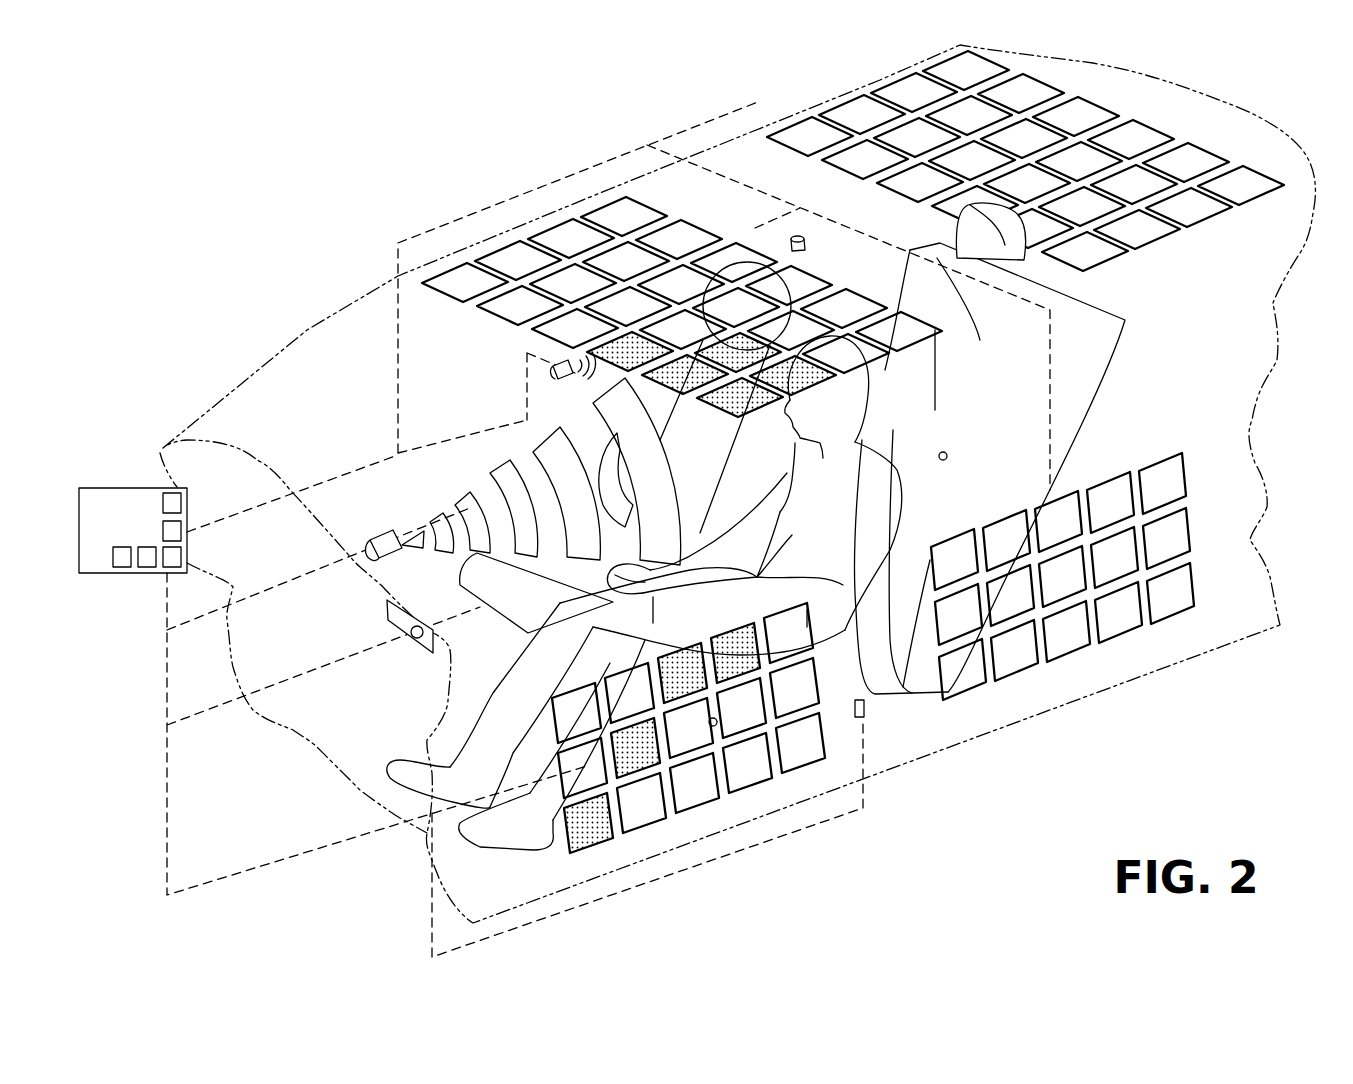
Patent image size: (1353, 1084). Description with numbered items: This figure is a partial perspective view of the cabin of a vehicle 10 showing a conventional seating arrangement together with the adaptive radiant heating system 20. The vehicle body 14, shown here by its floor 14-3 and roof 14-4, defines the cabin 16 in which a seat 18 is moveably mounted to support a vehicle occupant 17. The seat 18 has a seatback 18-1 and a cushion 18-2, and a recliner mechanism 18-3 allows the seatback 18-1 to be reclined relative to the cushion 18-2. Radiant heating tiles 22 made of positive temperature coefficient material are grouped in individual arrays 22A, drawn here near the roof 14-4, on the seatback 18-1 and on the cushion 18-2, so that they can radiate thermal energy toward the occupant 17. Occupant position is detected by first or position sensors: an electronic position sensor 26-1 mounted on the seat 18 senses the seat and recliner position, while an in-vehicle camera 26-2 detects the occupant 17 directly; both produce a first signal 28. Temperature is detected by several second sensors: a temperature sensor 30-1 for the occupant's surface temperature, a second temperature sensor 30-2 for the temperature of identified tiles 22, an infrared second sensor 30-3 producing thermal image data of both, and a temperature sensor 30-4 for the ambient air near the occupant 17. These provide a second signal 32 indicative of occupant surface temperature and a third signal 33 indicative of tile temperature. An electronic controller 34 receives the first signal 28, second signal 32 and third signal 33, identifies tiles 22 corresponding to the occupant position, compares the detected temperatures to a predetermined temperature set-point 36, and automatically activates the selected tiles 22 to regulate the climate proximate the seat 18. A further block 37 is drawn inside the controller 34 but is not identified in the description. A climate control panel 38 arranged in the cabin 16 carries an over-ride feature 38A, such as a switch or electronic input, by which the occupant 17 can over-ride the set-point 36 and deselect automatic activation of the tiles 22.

The vehicle 10 is at (470, 128).
The vehicle body 14 is at (307, 328).
The floor 14-3 is at (497, 907).
The roof 14-4 is at (690, 200).
The cabin 16 is at (437, 423).
The vehicle occupant 17 is at (817, 500).
The seat 18 is at (718, 462).
The seatback 18-1 is at (885, 602).
The cushion 18-2 is at (590, 652).
The recliner mechanism 18-3 is at (870, 705).
The adaptive radiant heating system 20 is at (228, 380).
The radiant heating tiles 22 is at (553, 330).
The array 22A is at (493, 320).
The electronic position sensor 26-1 is at (860, 718).
The in-vehicle camera 26-2 is at (380, 533).
The first signal 28 is at (172, 493).
The temperature sensor 30-1 is at (805, 250).
The second temperature sensor 30-2 is at (717, 725).
The infrared second sensor 30-3 is at (565, 379).
The temperature sensor 30-4 is at (960, 450).
The second signal 32 is at (182, 525).
The third signal 33 is at (182, 555).
The electronic controller 34 is at (97, 525).
The predetermined temperature set-point 36 is at (147, 569).
The module 37 is at (120, 569).
The climate control panel 38 is at (420, 658).
The over-ride feature 38A is at (430, 628).